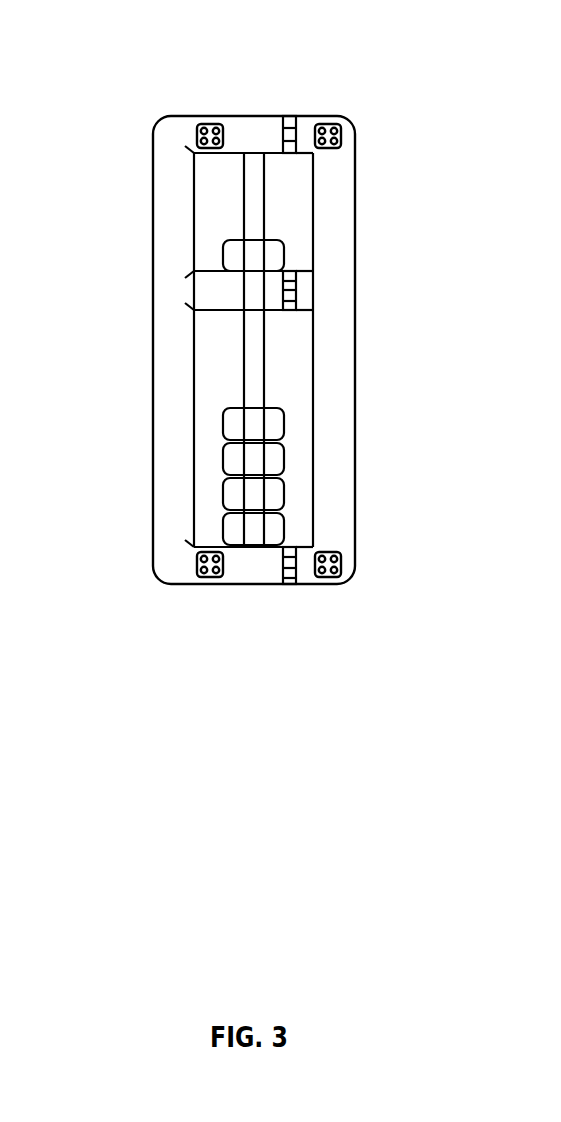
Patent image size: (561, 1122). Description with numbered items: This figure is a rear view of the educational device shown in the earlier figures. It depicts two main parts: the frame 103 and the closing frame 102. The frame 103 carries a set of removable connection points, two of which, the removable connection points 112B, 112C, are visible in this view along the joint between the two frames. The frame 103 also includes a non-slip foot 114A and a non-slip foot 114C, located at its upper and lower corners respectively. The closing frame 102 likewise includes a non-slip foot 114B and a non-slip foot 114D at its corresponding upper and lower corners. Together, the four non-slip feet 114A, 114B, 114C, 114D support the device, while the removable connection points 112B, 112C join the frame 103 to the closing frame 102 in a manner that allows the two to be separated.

The closing frame 102 is at (330, 112).
The frame 103 is at (175, 112).
The removable connection point 112B is at (282, 289).
The removable connection point 112C is at (285, 586).
The non-slip foot 114A is at (197, 124).
The non-slip foot 114B is at (343, 128).
The non-slip foot 114C is at (197, 561).
The non-slip foot 114D is at (345, 560).